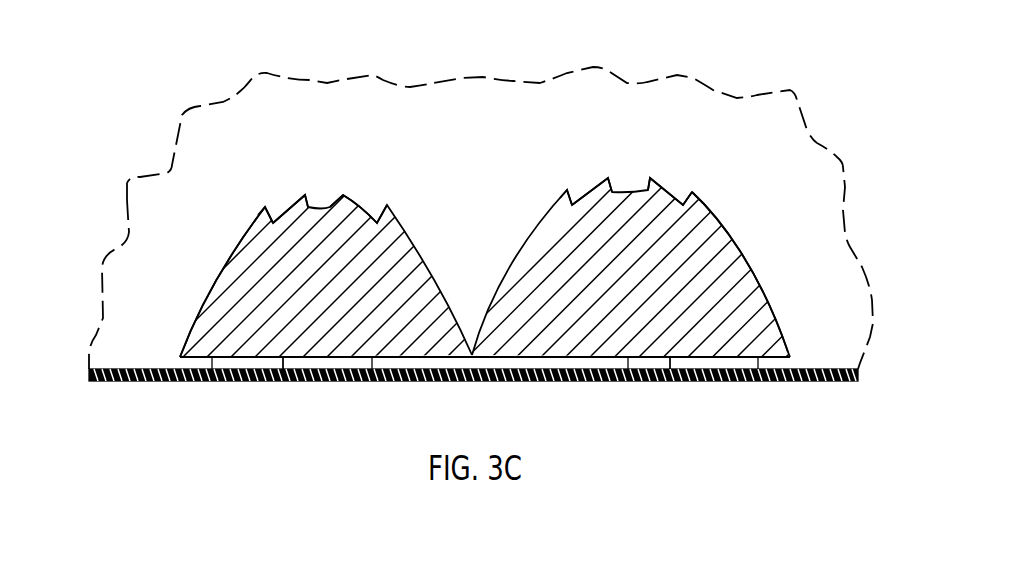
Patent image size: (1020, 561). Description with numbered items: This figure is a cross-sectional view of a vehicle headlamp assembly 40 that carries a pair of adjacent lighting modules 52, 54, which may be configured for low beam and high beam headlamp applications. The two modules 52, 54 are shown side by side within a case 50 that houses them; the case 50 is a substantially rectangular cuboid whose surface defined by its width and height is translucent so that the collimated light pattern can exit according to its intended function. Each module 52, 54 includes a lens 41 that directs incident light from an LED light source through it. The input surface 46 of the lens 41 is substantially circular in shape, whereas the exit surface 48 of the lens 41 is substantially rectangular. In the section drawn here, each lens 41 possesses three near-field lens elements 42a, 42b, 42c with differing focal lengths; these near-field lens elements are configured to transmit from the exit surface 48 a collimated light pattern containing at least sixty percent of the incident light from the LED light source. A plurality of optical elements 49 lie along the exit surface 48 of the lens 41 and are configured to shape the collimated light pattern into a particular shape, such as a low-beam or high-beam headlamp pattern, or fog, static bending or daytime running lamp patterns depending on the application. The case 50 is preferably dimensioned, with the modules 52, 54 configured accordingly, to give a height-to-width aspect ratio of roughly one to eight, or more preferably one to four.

The vehicle headlamp assembly 40 is at (772, 78).
The lens 41 is at (215, 281).
The near-field lens element 42a is at (263, 204).
The near-field lens element 42b is at (282, 202).
The near-field lens element 42c is at (302, 172).
The input surface 46 is at (163, 254).
The exit surface 48 is at (212, 384).
The optical elements 49 is at (371, 382).
The case 50 is at (130, 382).
The lighting module 52 is at (422, 243).
The lighting module 54 is at (730, 223).